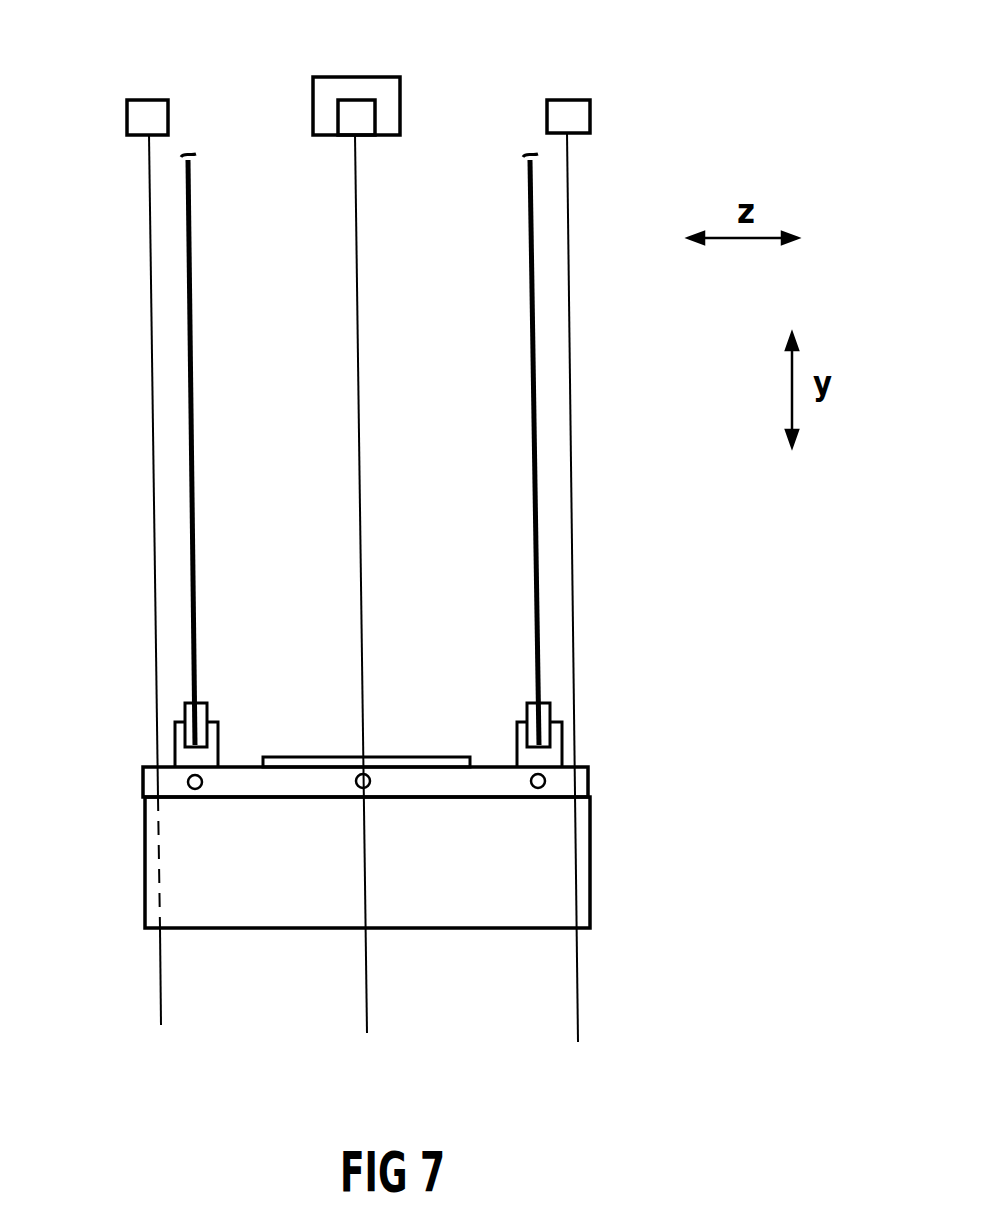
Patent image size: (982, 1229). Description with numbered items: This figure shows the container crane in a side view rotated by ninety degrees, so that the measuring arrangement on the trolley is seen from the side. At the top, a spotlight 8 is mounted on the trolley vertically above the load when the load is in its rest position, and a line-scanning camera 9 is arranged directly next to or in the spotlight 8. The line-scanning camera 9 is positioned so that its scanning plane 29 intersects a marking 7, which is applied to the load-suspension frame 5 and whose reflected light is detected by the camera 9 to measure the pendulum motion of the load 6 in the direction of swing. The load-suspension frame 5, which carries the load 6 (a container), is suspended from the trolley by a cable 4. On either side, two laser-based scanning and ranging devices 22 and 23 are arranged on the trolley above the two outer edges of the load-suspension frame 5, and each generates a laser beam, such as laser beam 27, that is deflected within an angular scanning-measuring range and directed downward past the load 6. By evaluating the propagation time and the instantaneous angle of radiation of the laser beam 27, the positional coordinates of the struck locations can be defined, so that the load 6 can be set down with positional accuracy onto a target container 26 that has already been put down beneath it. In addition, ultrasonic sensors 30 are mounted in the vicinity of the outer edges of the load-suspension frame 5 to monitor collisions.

The cable 4 is at (195, 378).
The load-suspension frame 5 is at (590, 780).
The load 6 is at (582, 860).
The marking 7 is at (412, 760).
The spotlight 8 is at (333, 85).
The line-scanning camera 9 is at (362, 108).
The laser-based scanning and ranging device 22 is at (562, 103).
The laser-based scanning and ranging device 23 is at (144, 108).
The target container 26 is at (572, 357).
The laser beam 27 is at (150, 358).
The scanning plane 29 is at (362, 472).
The ultrasonic sensors 30 is at (187, 782).